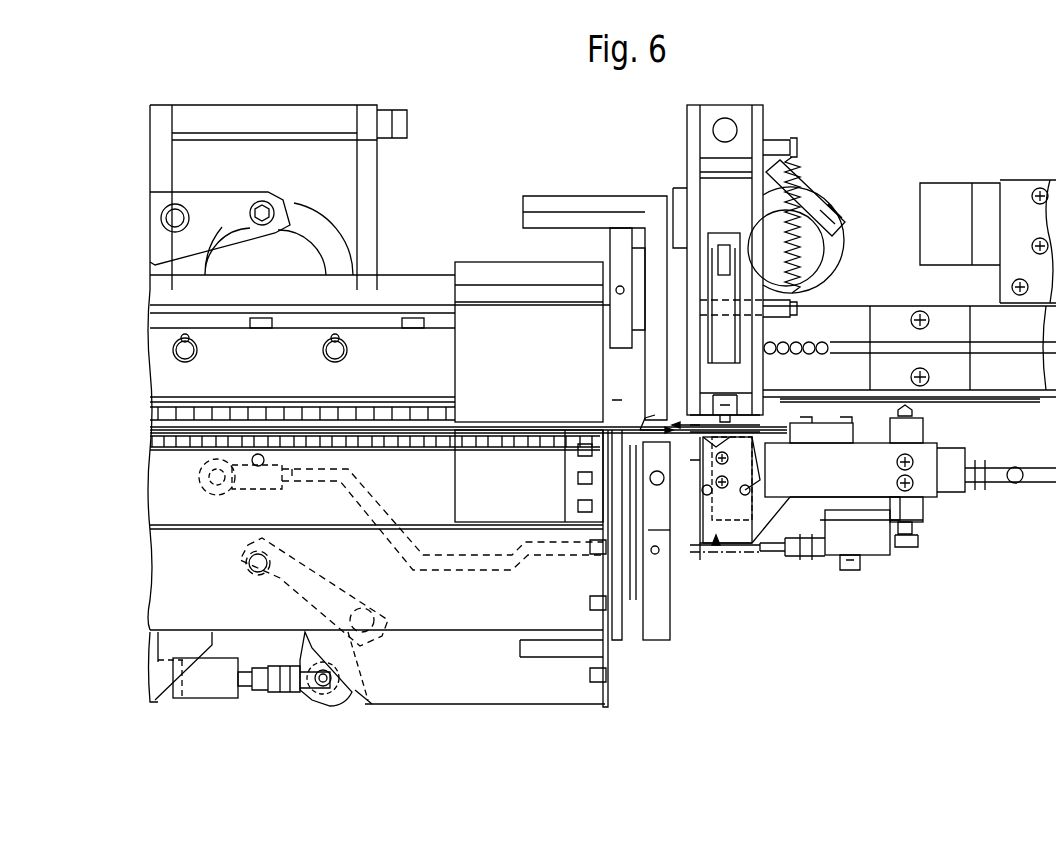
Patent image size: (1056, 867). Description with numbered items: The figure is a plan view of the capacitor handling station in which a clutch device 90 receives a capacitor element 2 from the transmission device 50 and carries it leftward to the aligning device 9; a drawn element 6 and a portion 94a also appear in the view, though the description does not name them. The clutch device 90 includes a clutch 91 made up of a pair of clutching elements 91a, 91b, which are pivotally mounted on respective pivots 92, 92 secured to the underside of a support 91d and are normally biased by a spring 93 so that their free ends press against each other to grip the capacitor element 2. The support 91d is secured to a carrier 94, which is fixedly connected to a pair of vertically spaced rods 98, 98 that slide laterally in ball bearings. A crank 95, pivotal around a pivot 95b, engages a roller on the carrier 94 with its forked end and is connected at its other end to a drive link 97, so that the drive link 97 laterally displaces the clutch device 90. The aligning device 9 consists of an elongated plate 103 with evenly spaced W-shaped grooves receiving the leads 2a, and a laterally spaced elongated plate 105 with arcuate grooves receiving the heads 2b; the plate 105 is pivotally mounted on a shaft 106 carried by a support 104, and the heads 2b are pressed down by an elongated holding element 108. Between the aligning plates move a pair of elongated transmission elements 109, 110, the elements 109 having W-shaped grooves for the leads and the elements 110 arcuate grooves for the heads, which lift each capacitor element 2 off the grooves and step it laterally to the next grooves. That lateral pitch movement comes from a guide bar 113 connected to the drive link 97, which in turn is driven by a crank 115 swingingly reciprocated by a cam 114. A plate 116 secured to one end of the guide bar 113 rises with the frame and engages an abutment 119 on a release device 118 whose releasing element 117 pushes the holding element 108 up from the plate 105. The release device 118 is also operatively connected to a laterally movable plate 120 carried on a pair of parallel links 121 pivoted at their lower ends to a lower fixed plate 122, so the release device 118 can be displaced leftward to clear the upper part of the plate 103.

The capacitor element 2 is at (823, 347).
The leads 2a is at (688, 543).
The head 2b is at (693, 567).
The chain 6 is at (853, 347).
The aligning device 9 is at (416, 266).
The transmission device 50 is at (845, 400).
The clutch device 90 is at (745, 570).
The clutch 91 is at (700, 544).
The clutching element 91a is at (704, 511).
The clutching element 91b is at (756, 466).
The support 91d is at (812, 520).
The pivot 92 is at (781, 490).
The spring 93 is at (792, 561).
The carrier 94 is at (925, 506).
The valve port 94a is at (935, 529).
The crank 95 is at (780, 541).
The pivot 95b is at (885, 544).
The drive link 97 is at (848, 571).
The rod 98 is at (1005, 482).
The elongated plate 103 is at (352, 448).
The support 104 is at (657, 196).
The elongated plate 105 is at (349, 415).
The shaft 106 is at (602, 293).
The holding element 108 is at (431, 420).
The transmission element 109 is at (328, 464).
The transmission element 110 is at (316, 420).
The guide bar 113 is at (619, 631).
The cam 114 is at (304, 213).
The crank 115 is at (222, 192).
The plate 116 is at (650, 460).
The releasing element 117 is at (498, 425).
The release device 118 is at (585, 463).
The abutment 119 is at (646, 484).
The laterally movable plate 120 is at (450, 632).
The link 121 is at (607, 644).
The lower fixed plate 122 is at (474, 708).